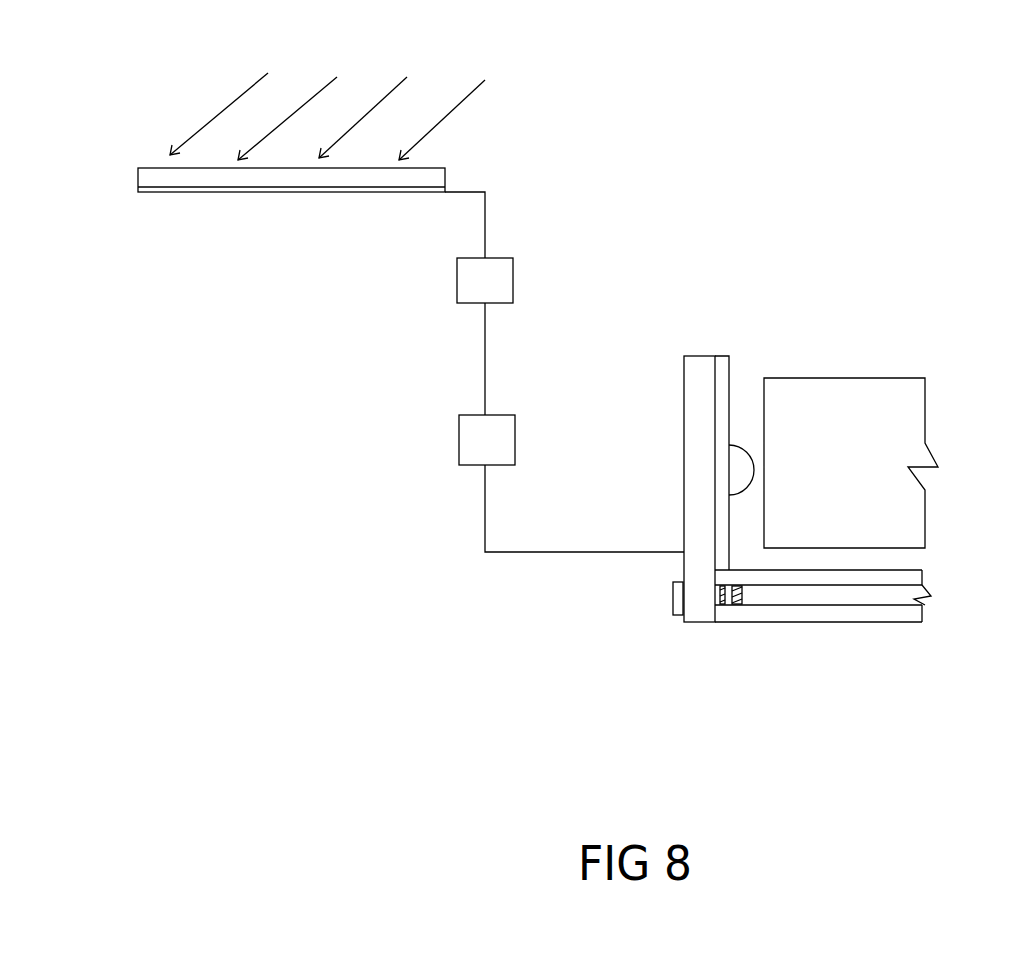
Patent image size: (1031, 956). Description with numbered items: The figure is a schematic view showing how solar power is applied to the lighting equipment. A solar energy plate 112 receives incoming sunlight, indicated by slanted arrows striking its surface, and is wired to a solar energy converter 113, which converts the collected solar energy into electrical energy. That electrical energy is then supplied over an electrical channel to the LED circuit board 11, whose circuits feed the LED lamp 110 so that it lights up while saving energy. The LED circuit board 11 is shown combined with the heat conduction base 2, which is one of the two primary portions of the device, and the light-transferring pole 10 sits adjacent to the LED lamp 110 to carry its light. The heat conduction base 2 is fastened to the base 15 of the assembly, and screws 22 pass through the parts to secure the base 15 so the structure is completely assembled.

The heat conduction base 2 is at (703, 615).
The light-transferring pole 10 is at (860, 388).
The LED circuit board 11 is at (725, 378).
The base 15 is at (810, 617).
The screws 22 is at (677, 598).
The LED lamp 110 is at (745, 473).
The solar energy plate 112 is at (446, 168).
The solar energy converter 113 is at (500, 285).